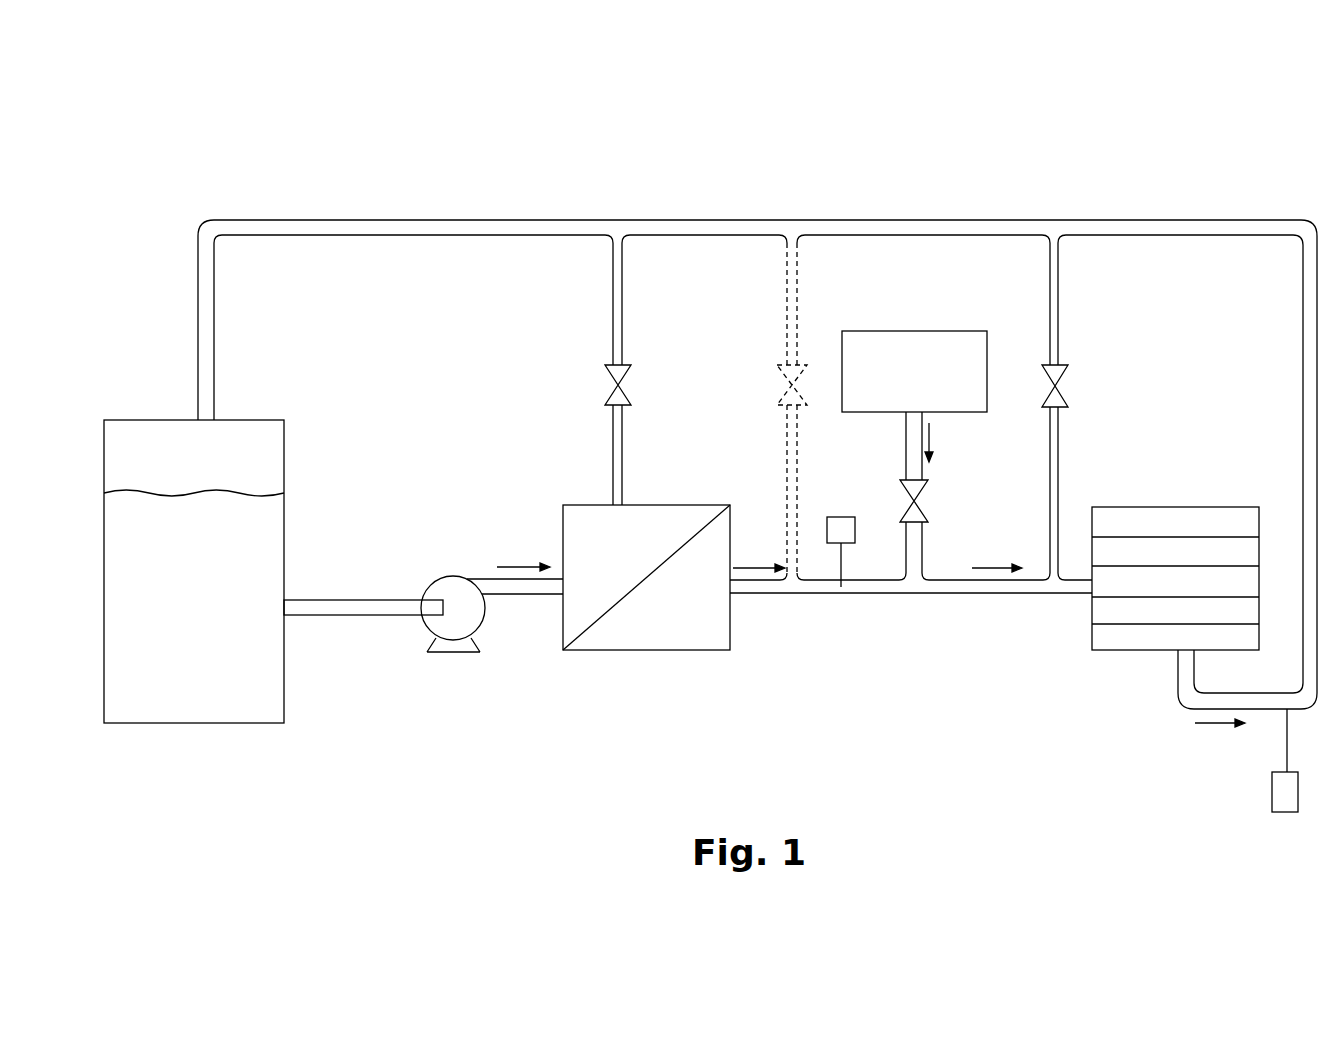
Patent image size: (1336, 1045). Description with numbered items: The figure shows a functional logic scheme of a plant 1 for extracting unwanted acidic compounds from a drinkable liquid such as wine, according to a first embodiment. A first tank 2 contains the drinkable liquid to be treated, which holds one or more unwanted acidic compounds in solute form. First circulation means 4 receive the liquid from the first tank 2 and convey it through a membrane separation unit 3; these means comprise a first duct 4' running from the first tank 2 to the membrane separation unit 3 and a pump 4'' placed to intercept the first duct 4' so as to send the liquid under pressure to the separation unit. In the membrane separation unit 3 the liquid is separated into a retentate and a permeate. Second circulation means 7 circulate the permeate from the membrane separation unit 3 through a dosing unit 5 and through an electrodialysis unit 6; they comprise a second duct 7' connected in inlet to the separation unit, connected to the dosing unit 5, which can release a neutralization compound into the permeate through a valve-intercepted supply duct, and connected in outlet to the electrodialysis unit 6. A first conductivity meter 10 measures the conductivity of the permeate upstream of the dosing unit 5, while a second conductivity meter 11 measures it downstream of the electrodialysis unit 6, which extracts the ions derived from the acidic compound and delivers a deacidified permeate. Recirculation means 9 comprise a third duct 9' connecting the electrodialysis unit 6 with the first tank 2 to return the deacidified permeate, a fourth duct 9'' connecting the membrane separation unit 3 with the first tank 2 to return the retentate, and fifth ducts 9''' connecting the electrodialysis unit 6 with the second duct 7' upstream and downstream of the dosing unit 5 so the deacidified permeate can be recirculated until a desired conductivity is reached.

The plant 1 is at (1180, 188).
The first tank 2 is at (119, 474).
The membrane separation unit 3 is at (573, 491).
The first circulation means 4 is at (423, 671).
The first duct 4' is at (363, 566).
The pump 4'' is at (492, 574).
The dosing unit 5 is at (953, 337).
The electrodialysis unit 6 is at (1222, 490).
The second circulation means 7 is at (911, 678).
The second duct 7' is at (911, 539).
The recirculation means 9 is at (757, 402).
The third duct 9' is at (758, 400).
The fourth duct 9'' is at (638, 384).
The fifth duct 9''' is at (949, 407).
The first conductivity meter 10 is at (843, 520).
The second conductivity meter 11 is at (1284, 801).